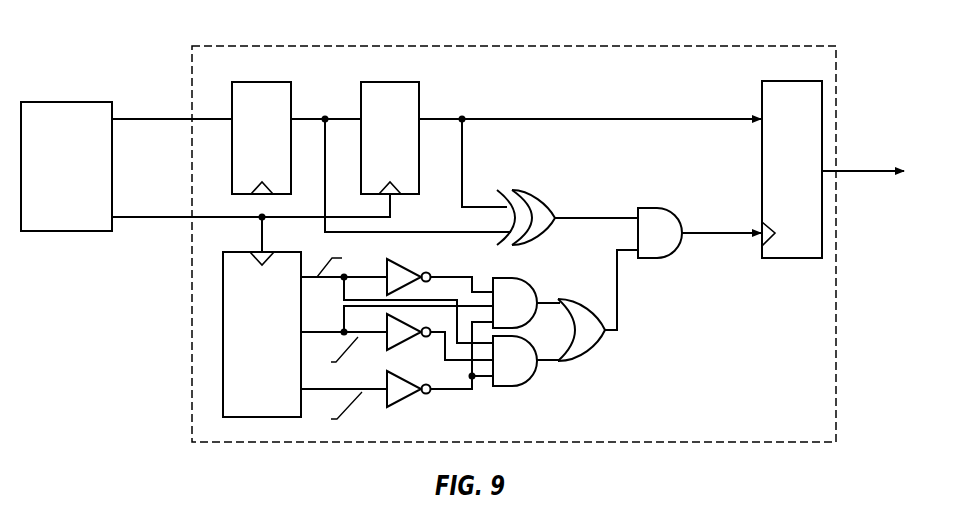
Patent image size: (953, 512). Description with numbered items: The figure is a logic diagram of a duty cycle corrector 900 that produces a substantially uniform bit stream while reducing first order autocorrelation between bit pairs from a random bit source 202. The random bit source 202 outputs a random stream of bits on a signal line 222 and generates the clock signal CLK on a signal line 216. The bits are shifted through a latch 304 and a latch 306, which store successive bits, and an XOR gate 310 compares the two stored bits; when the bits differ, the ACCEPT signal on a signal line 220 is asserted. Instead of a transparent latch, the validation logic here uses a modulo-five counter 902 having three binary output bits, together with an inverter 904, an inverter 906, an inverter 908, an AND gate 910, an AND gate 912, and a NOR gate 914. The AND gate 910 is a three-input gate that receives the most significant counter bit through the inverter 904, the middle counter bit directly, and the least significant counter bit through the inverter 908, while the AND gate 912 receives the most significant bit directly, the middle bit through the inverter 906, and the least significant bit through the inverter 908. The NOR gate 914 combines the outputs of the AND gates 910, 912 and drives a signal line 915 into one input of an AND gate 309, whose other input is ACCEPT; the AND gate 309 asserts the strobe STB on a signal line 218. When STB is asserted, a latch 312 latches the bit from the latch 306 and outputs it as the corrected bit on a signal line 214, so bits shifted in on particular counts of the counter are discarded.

The duty cycle corrector 900 is at (757, 46).
The random bit source 202 is at (90, 101).
The signal line 222 is at (122, 119).
The signal line 216 is at (122, 217).
The latch 304 is at (263, 82).
The latch 306 is at (388, 82).
The XOR gate 310 is at (527, 190).
The signal line 220 is at (612, 226).
The AND gate 309 is at (657, 210).
The signal line 218 is at (733, 238).
The latch 312 is at (762, 81).
The signal line 214 is at (840, 171).
The modulo-5 counter 902 is at (253, 252).
The inverter 904 is at (407, 268).
The inverter 906 is at (395, 349).
The inverter 908 is at (405, 398).
The AND gate 910 is at (525, 280).
The AND gate 912 is at (524, 381).
The NOR gate 914 is at (600, 343).
The signal line 915 is at (617, 290).